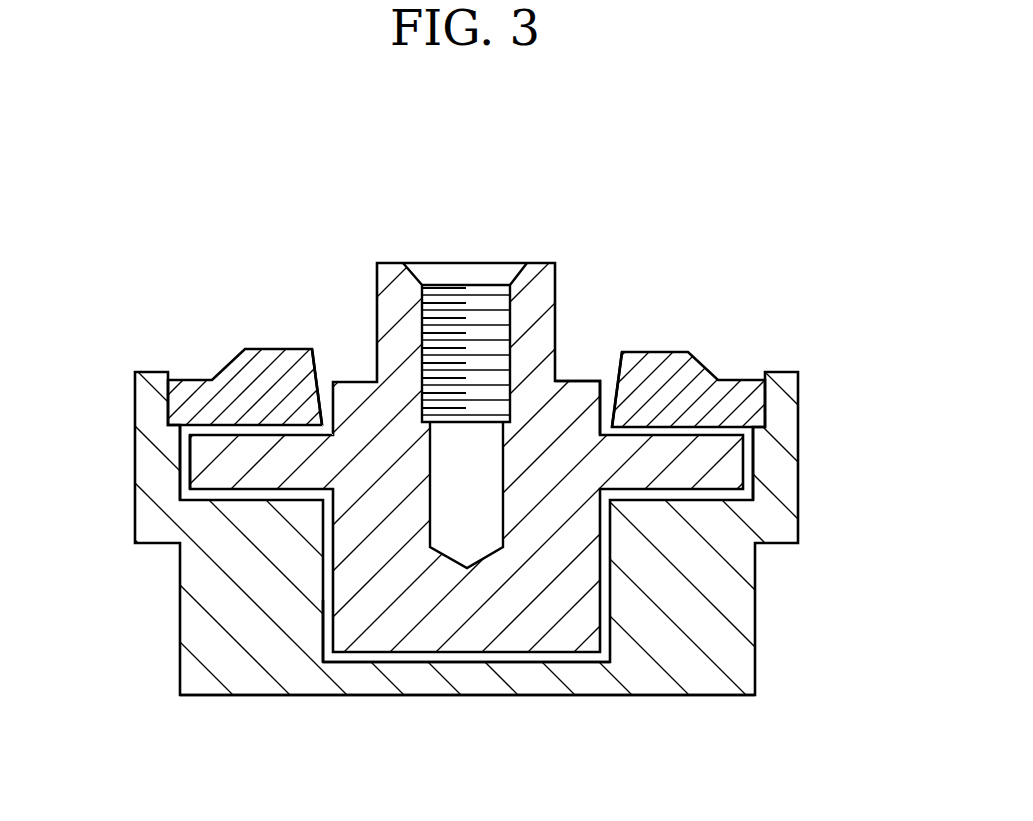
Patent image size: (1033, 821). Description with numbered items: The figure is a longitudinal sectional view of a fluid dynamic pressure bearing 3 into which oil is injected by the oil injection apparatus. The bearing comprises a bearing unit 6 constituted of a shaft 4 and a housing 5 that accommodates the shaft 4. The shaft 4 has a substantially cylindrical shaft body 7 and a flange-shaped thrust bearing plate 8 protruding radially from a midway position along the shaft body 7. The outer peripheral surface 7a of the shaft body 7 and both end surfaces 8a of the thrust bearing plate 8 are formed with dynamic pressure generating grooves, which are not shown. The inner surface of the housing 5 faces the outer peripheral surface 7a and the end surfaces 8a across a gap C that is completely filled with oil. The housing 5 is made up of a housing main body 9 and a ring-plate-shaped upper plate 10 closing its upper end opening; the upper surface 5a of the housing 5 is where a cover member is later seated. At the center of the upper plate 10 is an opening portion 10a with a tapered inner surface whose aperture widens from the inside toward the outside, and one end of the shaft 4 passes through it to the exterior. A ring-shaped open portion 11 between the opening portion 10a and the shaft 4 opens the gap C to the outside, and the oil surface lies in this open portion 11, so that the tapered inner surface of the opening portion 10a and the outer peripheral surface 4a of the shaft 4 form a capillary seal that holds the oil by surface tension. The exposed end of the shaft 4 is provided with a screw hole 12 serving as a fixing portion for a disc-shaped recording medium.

The fluid dynamic pressure bearing 3 is at (826, 245).
The shaft 4 is at (582, 590).
The outer peripheral surface 4a is at (327, 407).
The housing 5 is at (806, 478).
The upper surface 5a is at (277, 350).
The bearing unit 6 is at (880, 452).
The shaft body 7 is at (569, 399).
The outer peripheral surface 7a is at (605, 633).
The thrust bearing plate 8 is at (753, 433).
The end surfaces 8a is at (218, 432).
The housing main body 9 is at (678, 678).
The upper plate 10 is at (706, 372).
The opening portion 10a is at (618, 374).
The open portion 11 is at (318, 347).
The screw hole 12 is at (505, 307).
The gap C is at (327, 632).